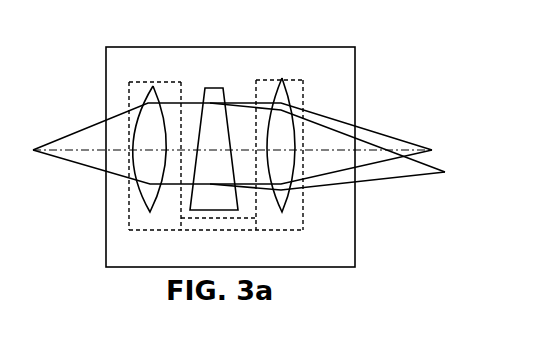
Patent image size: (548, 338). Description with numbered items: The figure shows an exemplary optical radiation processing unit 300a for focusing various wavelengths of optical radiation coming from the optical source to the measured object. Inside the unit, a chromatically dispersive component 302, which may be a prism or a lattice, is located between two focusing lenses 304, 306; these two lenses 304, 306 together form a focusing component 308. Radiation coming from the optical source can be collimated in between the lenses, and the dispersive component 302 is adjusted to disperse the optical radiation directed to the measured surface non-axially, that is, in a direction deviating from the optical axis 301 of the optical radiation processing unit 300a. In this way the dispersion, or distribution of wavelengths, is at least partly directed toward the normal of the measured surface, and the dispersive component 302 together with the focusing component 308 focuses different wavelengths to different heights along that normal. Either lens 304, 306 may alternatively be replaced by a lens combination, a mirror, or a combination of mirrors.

The optical radiation processing unit 300a is at (283, 40).
The optical axis 301 is at (337, 147).
The chromatically dispersive component 302 is at (210, 87).
The focusing lens 304 is at (153, 86).
The focusing lens 306 is at (283, 80).
The focusing component 308 is at (264, 232).